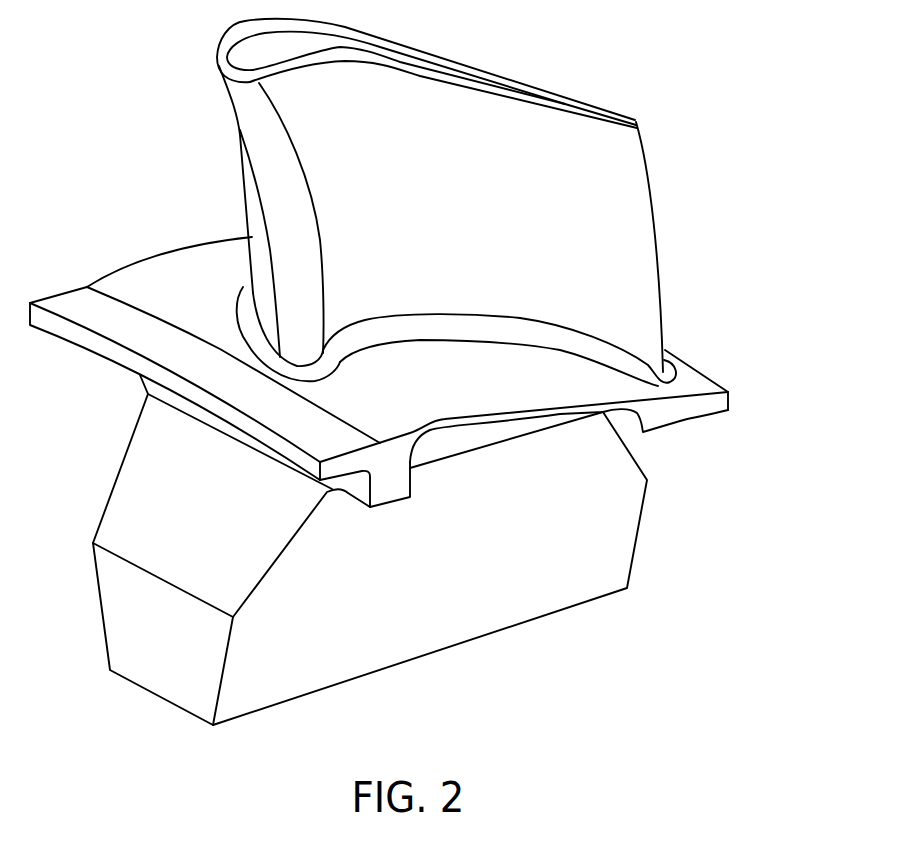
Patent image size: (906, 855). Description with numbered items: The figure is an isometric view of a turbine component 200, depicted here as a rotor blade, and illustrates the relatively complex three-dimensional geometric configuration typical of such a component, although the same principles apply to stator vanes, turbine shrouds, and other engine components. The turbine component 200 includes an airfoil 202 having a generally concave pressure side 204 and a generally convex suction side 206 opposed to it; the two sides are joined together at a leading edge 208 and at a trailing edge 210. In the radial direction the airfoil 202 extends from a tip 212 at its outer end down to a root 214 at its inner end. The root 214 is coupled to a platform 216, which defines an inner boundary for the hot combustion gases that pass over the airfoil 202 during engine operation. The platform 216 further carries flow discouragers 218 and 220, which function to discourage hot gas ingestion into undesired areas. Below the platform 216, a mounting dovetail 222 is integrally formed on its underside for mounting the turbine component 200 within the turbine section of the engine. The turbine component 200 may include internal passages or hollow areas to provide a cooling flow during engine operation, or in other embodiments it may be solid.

The turbine component 200 is at (428, 365).
The airfoil 202 is at (444, 196).
The pressure side 204 is at (474, 235).
The suction side 206 is at (254, 192).
The leading edge 208 is at (270, 293).
The trailing edge 210 is at (656, 190).
The tip 212 is at (448, 60).
The root 214 is at (430, 327).
The platform 216 is at (398, 348).
The flow discourager 218 is at (63, 303).
The flow discourager 220 is at (693, 363).
The mounting dovetail 222 is at (115, 630).